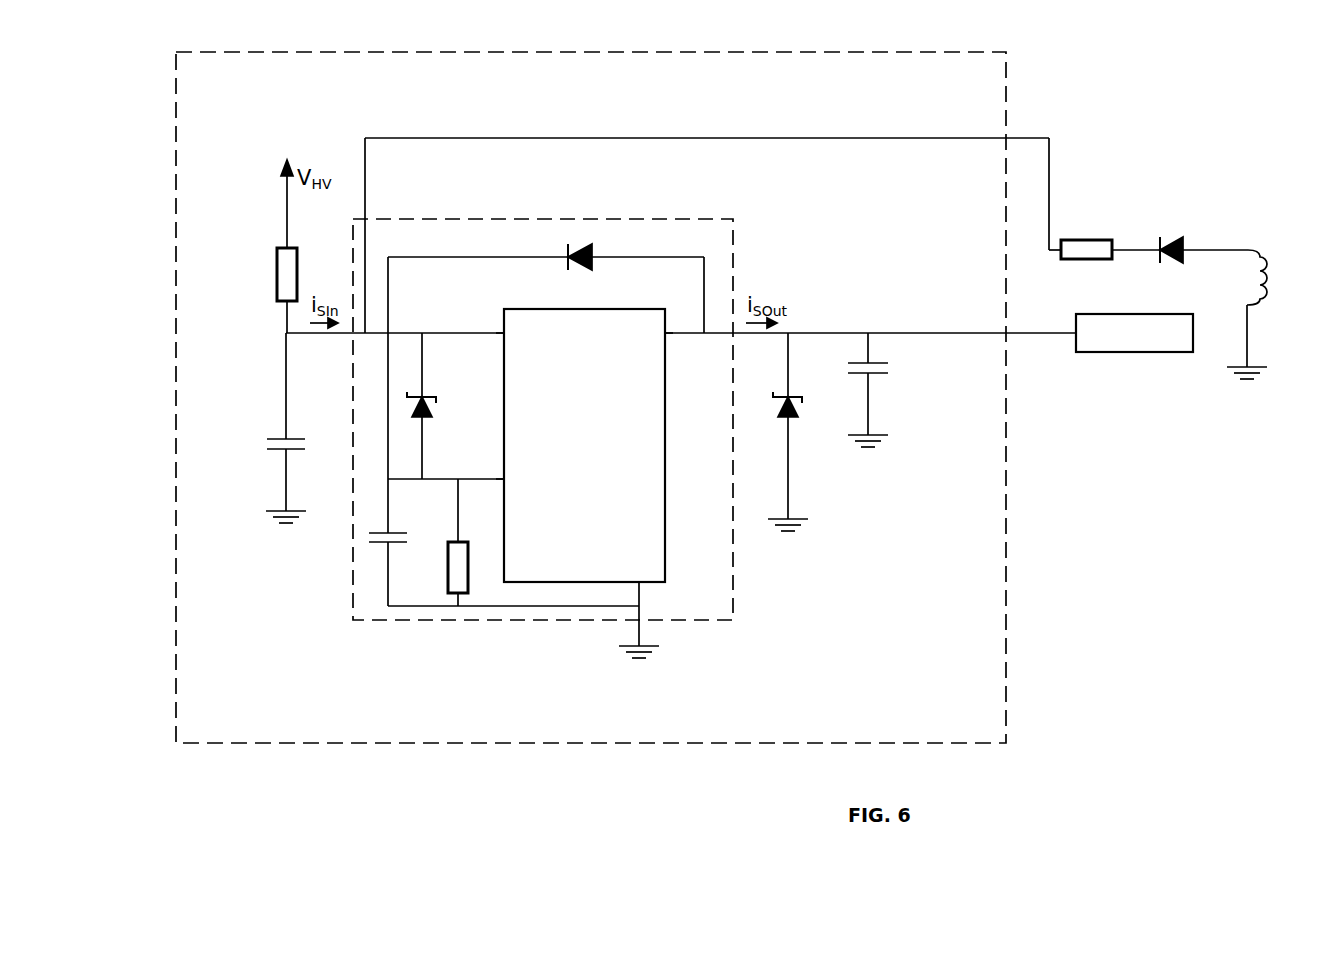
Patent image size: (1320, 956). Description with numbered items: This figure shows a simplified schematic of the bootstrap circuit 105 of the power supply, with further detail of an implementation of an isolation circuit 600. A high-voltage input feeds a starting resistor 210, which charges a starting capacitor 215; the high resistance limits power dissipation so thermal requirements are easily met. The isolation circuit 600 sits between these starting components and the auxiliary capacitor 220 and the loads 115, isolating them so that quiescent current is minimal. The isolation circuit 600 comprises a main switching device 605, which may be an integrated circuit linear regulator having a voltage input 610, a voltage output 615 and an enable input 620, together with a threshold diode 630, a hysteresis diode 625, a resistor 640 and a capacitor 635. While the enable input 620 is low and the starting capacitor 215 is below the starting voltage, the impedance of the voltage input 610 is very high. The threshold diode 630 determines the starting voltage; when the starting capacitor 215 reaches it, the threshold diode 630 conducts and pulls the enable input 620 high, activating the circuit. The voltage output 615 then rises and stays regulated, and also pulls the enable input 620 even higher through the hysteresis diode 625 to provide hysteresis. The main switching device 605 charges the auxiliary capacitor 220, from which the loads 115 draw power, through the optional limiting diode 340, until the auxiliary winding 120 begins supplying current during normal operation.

The bootstrap circuit 105 is at (176, 161).
The loads 115 is at (1149, 352).
The auxiliary winding 120 is at (1265, 305).
The starting resistor 210 is at (276, 269).
The starting capacitor 215 is at (272, 451).
The auxiliary capacitor 220 is at (877, 375).
The limiting diode 340 is at (782, 413).
The isolation circuit 600 is at (475, 218).
The main switching device 605 is at (665, 548).
The voltage input 610 is at (497, 334).
The voltage output 615 is at (673, 334).
The enable input 620 is at (502, 478).
The hysteresis diode 625 is at (595, 263).
The threshold diode 630 is at (428, 420).
The capacitor 635 is at (403, 543).
The resistor 640 is at (450, 543).